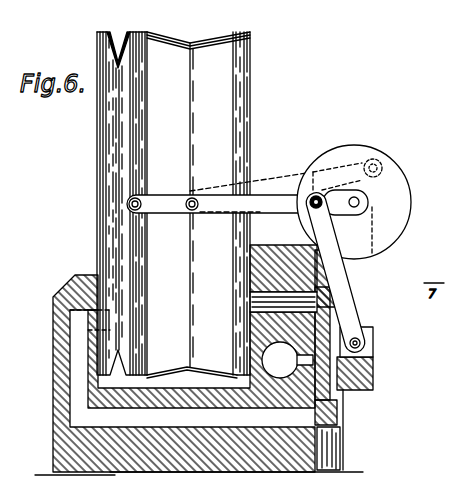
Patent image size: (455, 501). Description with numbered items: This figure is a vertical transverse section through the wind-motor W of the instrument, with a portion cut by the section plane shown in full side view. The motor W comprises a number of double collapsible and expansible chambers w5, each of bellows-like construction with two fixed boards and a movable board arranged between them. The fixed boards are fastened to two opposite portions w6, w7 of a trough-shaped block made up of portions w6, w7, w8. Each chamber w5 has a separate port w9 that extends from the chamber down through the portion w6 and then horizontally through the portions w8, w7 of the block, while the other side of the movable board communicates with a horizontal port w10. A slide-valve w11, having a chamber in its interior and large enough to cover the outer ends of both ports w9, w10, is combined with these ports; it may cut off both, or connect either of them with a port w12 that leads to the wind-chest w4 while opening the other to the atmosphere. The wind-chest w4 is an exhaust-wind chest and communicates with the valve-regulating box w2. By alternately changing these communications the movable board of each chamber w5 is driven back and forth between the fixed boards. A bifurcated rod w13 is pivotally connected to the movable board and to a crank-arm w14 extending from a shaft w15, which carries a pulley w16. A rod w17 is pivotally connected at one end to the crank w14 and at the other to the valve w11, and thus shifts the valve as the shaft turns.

The motor W is at (152, 203).
The valve-regulating box w2 is at (80, 371).
The wind-chest w4 is at (280, 360).
The double collapsible and expansible chamber w5 is at (140, 200).
The portion of trough-shaped block w6 is at (78, 275).
The portion of trough-shaped block w7 is at (293, 248).
The portion of trough-shaped block w8 is at (232, 340).
The port w9 is at (190, 424).
The horizontal port w10 is at (275, 247).
The valve w11 is at (360, 390).
The port w12 is at (290, 364).
The bifurcated rod w13 is at (272, 192).
The crank-arm w14 is at (325, 190).
The shaft w15 is at (359, 202).
The pulley w16 is at (399, 238).
The rod w17 is at (335, 238).